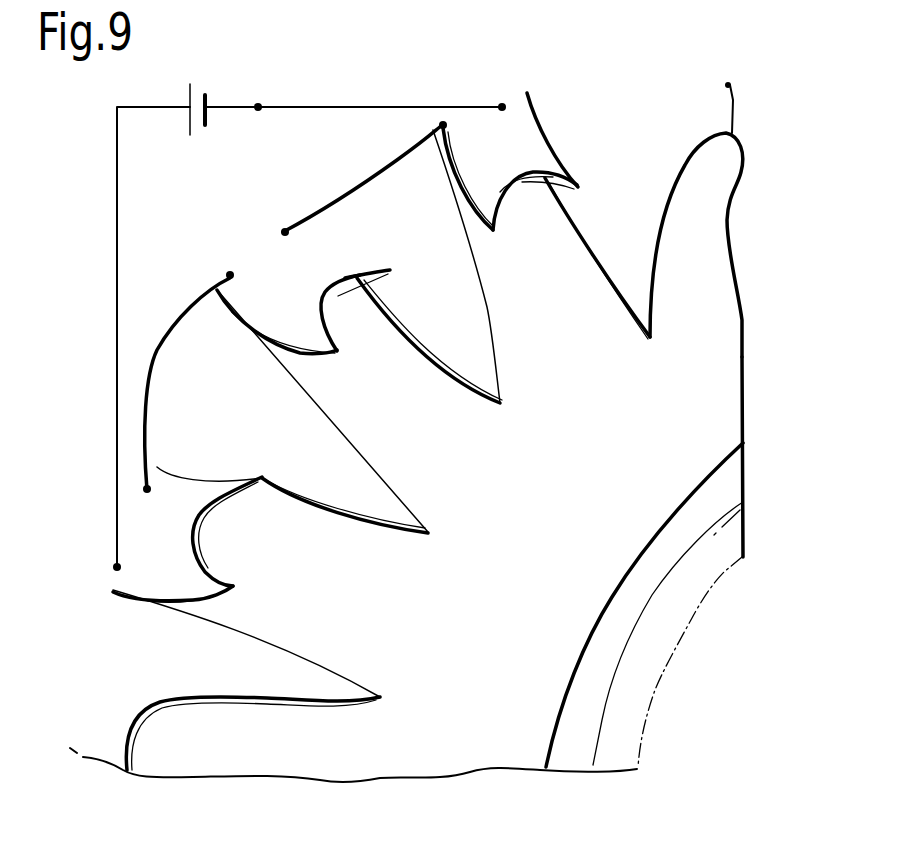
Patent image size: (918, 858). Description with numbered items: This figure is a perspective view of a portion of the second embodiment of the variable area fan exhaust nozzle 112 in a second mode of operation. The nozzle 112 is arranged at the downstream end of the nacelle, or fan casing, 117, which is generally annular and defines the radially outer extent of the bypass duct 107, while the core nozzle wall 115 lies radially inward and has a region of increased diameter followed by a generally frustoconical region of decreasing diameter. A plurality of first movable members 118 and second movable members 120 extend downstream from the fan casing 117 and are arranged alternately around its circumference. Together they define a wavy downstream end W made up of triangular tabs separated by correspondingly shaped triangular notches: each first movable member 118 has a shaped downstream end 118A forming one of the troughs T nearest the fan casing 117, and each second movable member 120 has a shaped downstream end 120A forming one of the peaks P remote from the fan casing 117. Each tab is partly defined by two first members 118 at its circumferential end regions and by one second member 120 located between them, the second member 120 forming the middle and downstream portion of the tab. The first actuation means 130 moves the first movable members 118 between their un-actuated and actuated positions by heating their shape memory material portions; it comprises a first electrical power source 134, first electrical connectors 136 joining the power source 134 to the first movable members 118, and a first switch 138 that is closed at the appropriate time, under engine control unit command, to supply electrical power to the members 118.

The first actuation means 130 is at (239, 90).
The first electrical power source 134 is at (190, 87).
The first electrical connectors 136 is at (393, 160).
The first switch 138 is at (286, 106).
The nacelle, fan casing 117 is at (177, 285).
The first movable members 118 is at (258, 277).
The shaped downstream end of first movable member 118A is at (313, 283).
The second movable members 120 is at (273, 425).
The shaped downstream end of second movable member 120A is at (480, 364).
The variable area fan exhaust nozzle 112 is at (760, 175).
The bypass duct 107 is at (727, 390).
The core nozzle wall 115 is at (717, 497).
The troughs T is at (333, 297).
The peaks P is at (500, 403).
The wavy downstream end W is at (665, 310).